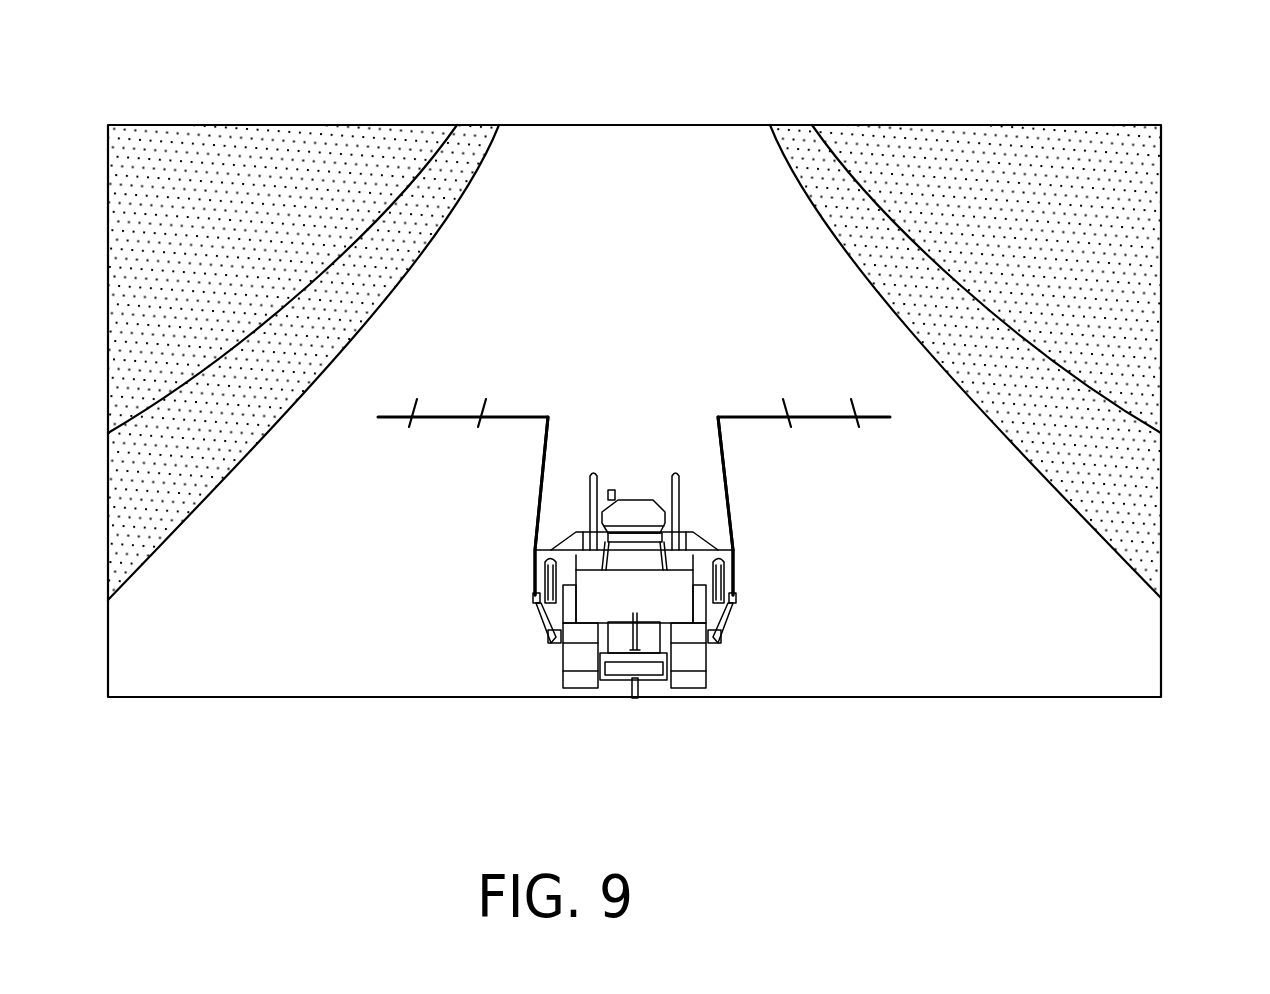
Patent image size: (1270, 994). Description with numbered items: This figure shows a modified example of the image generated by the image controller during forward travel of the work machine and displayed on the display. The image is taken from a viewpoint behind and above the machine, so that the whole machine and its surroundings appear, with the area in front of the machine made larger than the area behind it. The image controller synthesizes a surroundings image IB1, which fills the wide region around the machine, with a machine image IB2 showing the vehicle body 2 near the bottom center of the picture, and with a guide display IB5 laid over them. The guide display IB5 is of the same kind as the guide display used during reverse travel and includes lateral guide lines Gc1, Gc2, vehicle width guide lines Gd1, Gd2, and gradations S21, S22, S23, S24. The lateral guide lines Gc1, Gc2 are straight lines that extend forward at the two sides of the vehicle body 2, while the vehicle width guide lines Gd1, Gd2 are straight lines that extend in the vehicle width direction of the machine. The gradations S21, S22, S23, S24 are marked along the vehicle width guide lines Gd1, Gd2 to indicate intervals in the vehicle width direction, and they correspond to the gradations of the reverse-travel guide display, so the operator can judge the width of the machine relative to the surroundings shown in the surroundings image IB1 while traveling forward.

The vehicle body 2 is at (588, 607).
The surroundings image IB1 is at (630, 309).
The machine image IB2 is at (658, 692).
The guide display IB5 is at (914, 405).
The vehicle width guide line Gd1 is at (820, 417).
The vehicle width guide line Gd2 is at (449, 417).
The lateral guide line Gc1 is at (732, 502).
The lateral guide line Gc2 is at (537, 503).
The gradation S21 is at (793, 420).
The gradation S22 is at (858, 420).
The gradation S23 is at (478, 420).
The gradation S24 is at (408, 420).